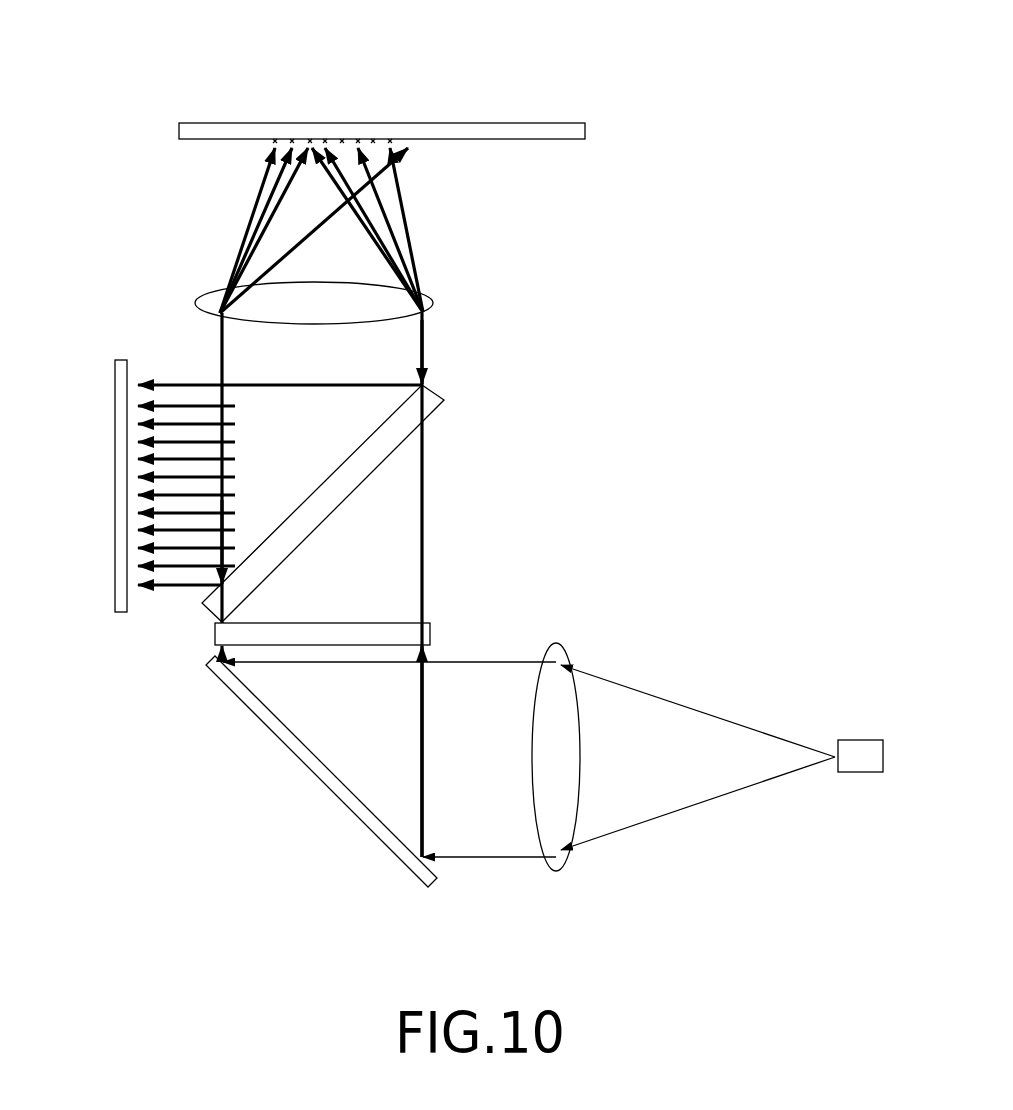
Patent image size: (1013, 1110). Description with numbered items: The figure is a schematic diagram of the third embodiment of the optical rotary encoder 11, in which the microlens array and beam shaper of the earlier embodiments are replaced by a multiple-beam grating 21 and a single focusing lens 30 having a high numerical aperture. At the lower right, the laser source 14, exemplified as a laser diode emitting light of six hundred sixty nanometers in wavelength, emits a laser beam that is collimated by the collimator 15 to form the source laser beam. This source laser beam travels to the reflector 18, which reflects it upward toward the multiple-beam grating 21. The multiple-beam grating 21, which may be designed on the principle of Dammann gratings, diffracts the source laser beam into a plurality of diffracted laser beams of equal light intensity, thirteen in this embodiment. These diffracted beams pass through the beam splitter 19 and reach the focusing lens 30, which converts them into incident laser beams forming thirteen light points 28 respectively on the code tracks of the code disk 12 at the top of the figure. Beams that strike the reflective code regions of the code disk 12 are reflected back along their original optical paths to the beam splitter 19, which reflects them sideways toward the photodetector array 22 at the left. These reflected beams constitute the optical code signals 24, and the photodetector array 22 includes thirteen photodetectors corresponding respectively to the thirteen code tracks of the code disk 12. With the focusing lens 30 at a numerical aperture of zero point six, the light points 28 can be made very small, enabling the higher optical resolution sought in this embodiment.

The optical rotary encoder 11 is at (147, 97).
The code disk 12 is at (587, 130).
The laser source 14 is at (858, 740).
The collimator 15 is at (560, 645).
The reflector 18 is at (300, 758).
The beam splitter 19 is at (200, 602).
The multiple-beam grating 21 is at (430, 633).
The photodetector array 22 is at (115, 447).
The optical code signals 24 is at (190, 380).
The light points 28 is at (355, 160).
The focusing lens 30 is at (432, 300).